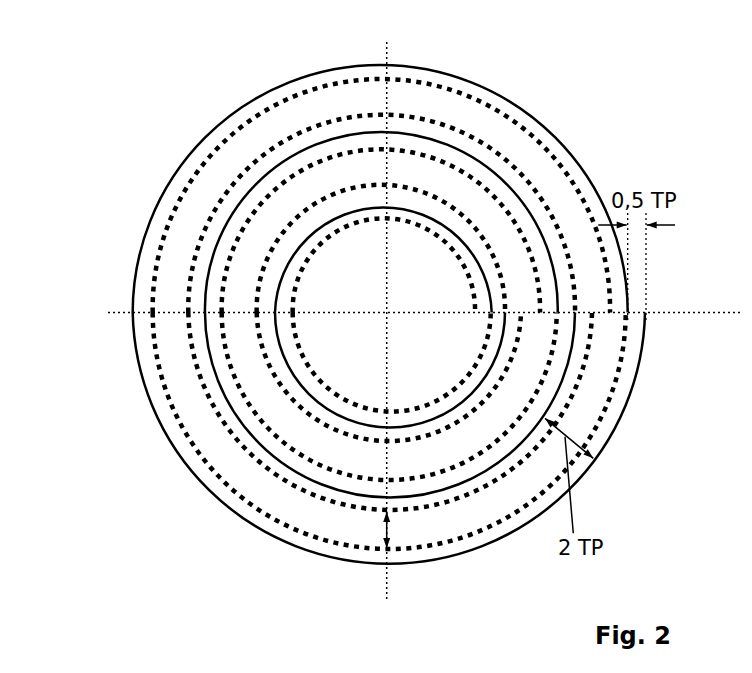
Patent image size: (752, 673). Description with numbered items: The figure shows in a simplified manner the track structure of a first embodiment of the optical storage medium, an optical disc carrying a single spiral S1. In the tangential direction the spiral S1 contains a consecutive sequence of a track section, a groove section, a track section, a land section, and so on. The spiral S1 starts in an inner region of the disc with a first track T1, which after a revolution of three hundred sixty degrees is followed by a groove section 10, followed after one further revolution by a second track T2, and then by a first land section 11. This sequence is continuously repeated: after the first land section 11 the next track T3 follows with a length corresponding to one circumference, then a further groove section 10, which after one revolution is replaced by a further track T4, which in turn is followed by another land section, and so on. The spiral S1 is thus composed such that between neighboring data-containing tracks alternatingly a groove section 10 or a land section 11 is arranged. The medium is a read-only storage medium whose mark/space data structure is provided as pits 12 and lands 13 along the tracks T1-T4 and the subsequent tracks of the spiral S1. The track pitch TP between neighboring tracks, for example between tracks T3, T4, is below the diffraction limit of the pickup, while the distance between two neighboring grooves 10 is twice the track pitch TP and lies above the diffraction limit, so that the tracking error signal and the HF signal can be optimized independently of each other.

The spiral S1 is at (550, 127).
The first track T1 is at (455, 258).
The second track T2 is at (288, 225).
The third track T3 is at (265, 420).
The fourth track T4 is at (257, 158).
The groove section 10 is at (293, 373).
The land section 11 is at (278, 498).
The pits 12 is at (287, 525).
The lands 13 is at (333, 540).
The track pitch TP is at (388, 527).